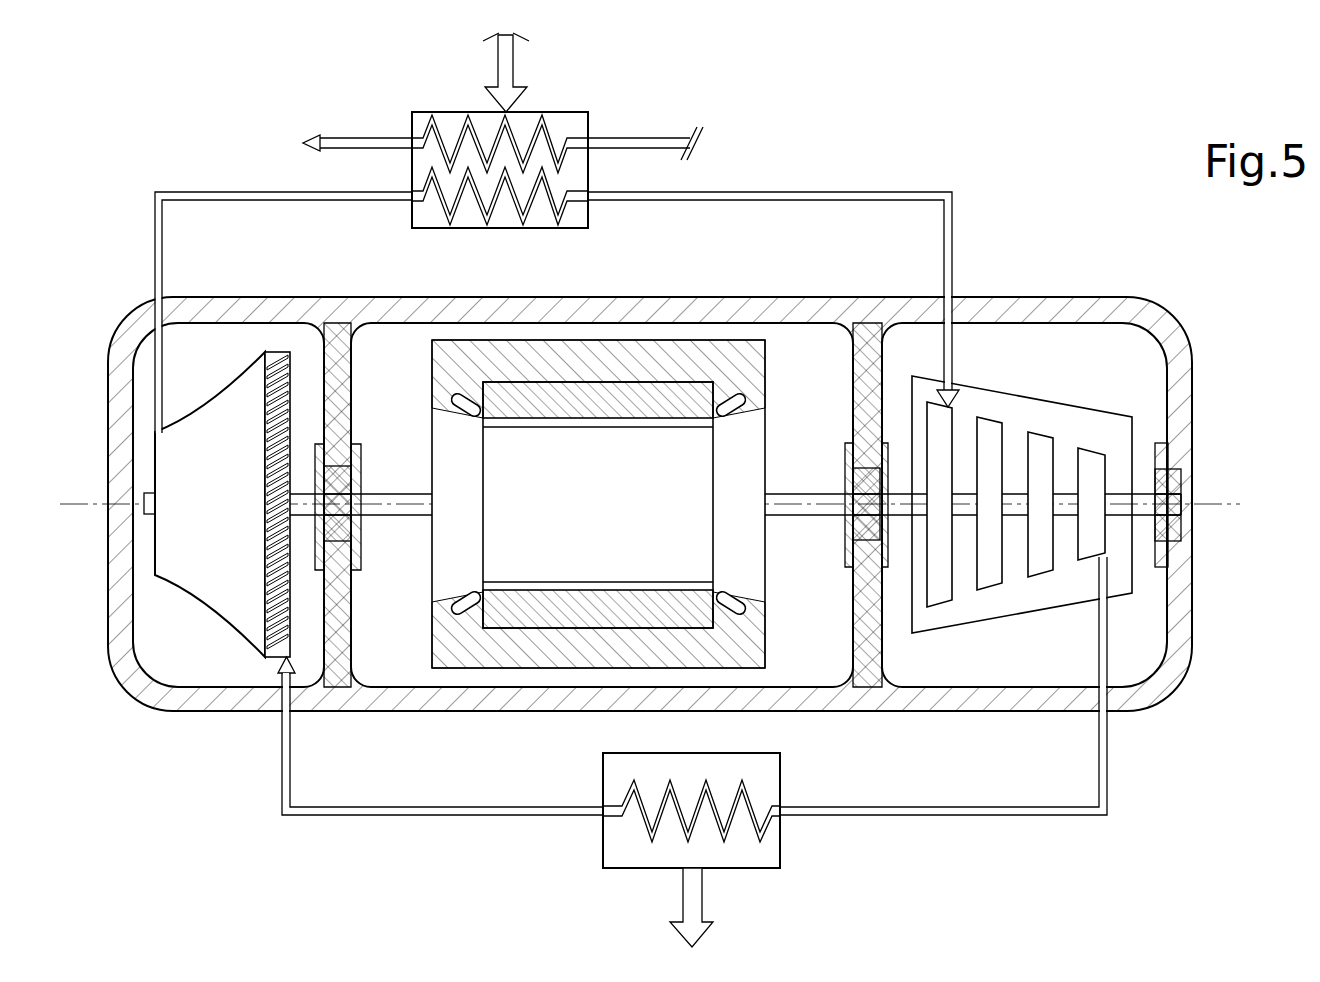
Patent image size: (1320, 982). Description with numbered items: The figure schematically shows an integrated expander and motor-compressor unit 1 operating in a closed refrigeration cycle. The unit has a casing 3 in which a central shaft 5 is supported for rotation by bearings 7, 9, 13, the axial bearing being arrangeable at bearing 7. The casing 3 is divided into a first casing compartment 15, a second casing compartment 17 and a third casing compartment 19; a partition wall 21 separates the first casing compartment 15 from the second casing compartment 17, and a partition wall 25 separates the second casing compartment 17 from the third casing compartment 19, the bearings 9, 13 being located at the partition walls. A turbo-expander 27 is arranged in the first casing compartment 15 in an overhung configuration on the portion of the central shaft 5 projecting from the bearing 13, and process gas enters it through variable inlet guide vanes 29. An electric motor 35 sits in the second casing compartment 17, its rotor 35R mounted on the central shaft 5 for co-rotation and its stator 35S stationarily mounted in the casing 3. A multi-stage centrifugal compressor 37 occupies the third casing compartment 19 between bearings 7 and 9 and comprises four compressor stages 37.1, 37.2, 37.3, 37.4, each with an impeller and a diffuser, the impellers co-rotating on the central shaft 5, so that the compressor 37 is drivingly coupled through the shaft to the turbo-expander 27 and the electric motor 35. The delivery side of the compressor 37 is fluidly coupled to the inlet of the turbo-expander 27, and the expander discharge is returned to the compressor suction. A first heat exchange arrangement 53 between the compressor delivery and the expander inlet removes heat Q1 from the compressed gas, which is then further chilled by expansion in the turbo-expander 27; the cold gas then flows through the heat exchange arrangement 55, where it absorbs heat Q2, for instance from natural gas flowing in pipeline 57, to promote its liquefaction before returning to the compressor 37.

The integrated expander and motor-compressor unit 1 is at (661, 498).
The casing 3 is at (1171, 663).
The central shaft 5 is at (395, 517).
The bearing 7 is at (1183, 476).
The bearing 9 is at (875, 527).
The bearing 13 is at (349, 476).
The first casing compartment 15 is at (180, 368).
The second casing compartment 17 is at (792, 657).
The third casing compartment 19 is at (980, 667).
The partition wall 21 is at (338, 638).
The partition wall 25 is at (868, 635).
The turbo-expander 27 is at (202, 522).
The variable inlet guide vanes 29 is at (278, 670).
The electric motor 35 is at (588, 496).
The rotor 35R is at (622, 488).
The stator 35S is at (540, 647).
The compressor 37 is at (1039, 501).
The compressor stage 37.1 is at (940, 418).
The compressor stage 37.2 is at (993, 428).
The compressor stage 37.3 is at (1047, 443).
The compressor stage 37.4 is at (1102, 457).
The heat exchange arrangement 53 is at (638, 868).
The heat exchange arrangement 55 is at (427, 112).
The pipeline 57 is at (642, 138).
The heat output Q1 is at (702, 903).
The heat input Q2 is at (513, 68).